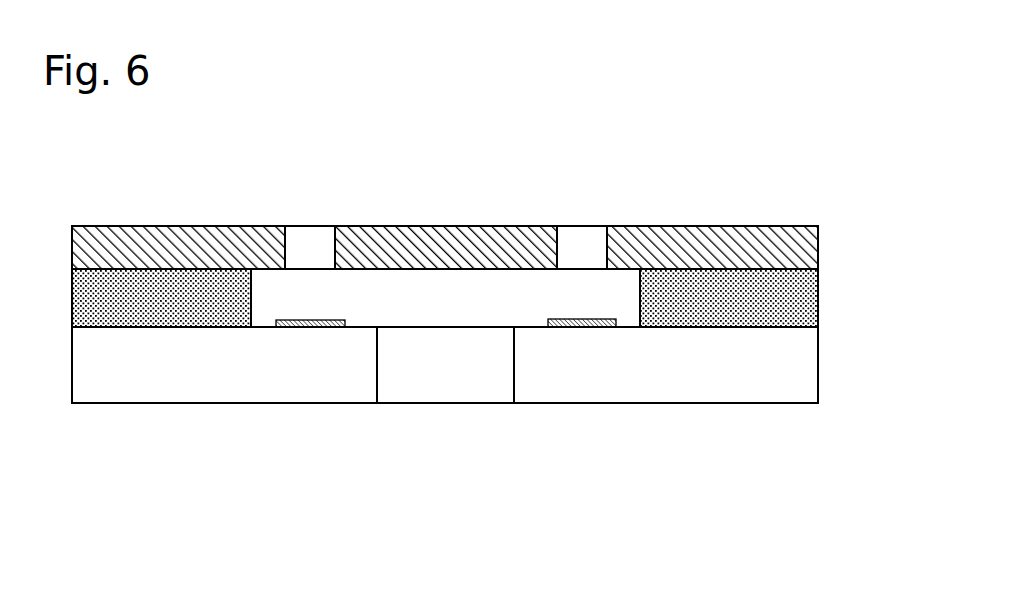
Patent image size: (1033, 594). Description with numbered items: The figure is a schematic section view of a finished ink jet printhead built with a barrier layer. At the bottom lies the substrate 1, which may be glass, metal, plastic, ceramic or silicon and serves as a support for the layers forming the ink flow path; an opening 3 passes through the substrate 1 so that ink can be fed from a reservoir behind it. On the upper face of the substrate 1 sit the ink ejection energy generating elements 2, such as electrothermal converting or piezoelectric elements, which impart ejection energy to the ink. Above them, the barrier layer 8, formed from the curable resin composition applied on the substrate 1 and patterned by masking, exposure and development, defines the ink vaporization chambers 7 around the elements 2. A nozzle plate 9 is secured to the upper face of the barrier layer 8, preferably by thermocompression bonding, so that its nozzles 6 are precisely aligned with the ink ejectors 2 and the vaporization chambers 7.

The substrate 1 is at (725, 368).
The ink ejection energy generating element 2 is at (582, 327).
The opening 3 is at (446, 377).
The nozzle 6 is at (575, 243).
The ink vaporization chamber 7 is at (309, 299).
The barrier layer 8 is at (709, 300).
The nozzle plate 9 is at (205, 238).